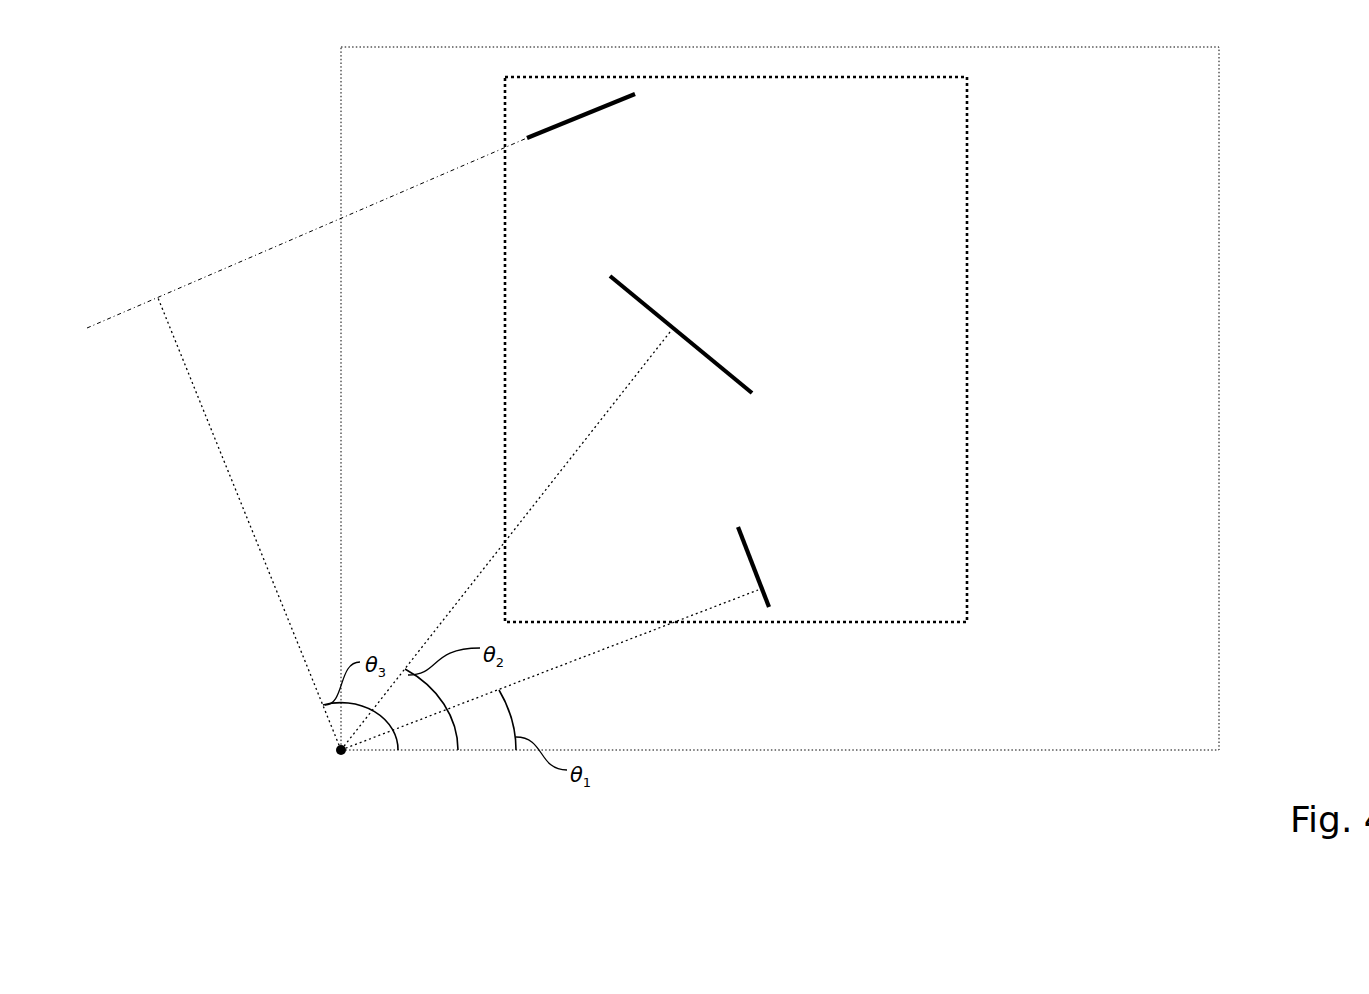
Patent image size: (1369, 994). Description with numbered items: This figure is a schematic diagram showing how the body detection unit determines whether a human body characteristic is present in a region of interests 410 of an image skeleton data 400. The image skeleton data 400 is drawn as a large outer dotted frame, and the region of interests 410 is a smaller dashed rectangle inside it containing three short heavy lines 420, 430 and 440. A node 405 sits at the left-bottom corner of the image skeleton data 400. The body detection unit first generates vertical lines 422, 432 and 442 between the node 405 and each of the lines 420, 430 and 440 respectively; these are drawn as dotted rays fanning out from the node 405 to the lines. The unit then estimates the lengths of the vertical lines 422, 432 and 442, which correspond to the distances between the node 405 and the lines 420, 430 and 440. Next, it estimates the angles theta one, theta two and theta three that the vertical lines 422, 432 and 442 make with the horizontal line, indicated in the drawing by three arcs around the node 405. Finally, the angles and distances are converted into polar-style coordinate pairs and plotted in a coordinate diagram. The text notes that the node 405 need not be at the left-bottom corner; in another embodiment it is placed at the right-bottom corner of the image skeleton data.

The image skeleton data 400 is at (1219, 88).
The node 405 is at (333, 750).
The region of interests 410 is at (968, 212).
The line 420 is at (760, 570).
The vertical line 422 is at (558, 667).
The line 430 is at (742, 383).
The vertical line 432 is at (618, 398).
The line 440 is at (578, 120).
The vertical line 442 is at (222, 462).